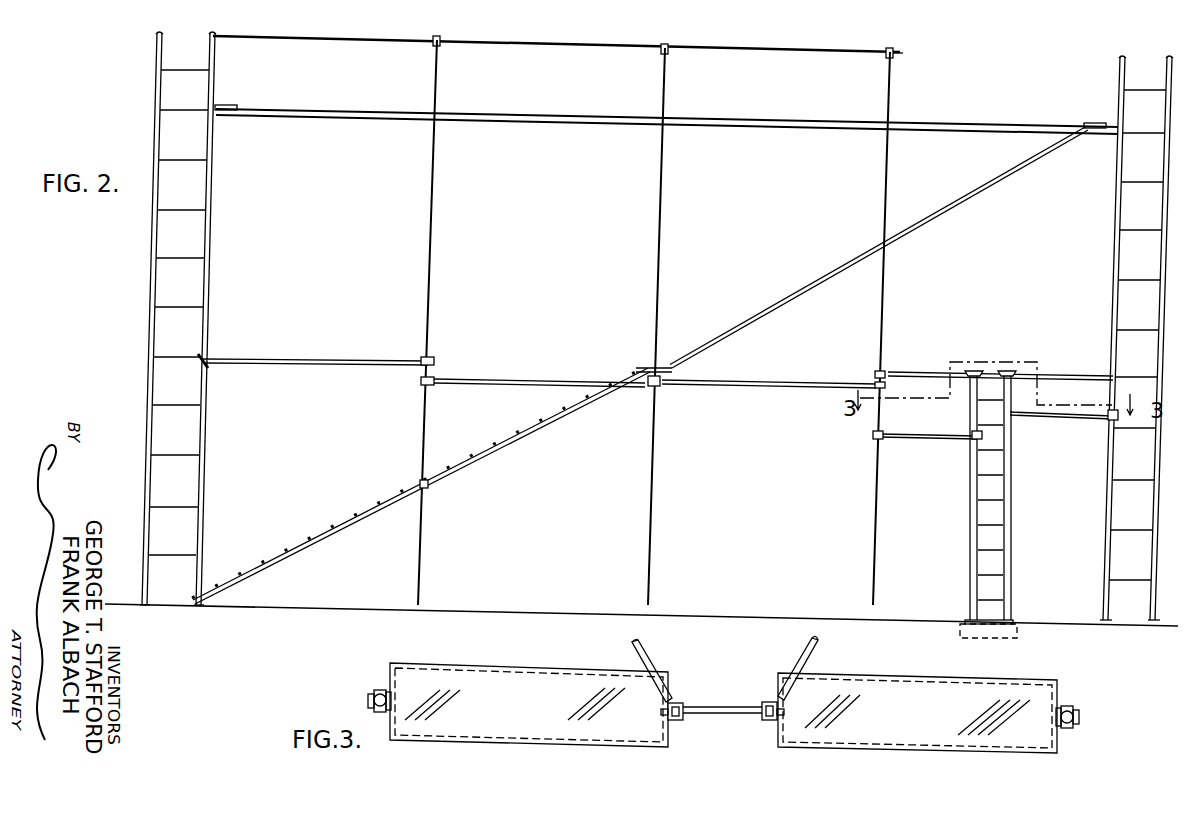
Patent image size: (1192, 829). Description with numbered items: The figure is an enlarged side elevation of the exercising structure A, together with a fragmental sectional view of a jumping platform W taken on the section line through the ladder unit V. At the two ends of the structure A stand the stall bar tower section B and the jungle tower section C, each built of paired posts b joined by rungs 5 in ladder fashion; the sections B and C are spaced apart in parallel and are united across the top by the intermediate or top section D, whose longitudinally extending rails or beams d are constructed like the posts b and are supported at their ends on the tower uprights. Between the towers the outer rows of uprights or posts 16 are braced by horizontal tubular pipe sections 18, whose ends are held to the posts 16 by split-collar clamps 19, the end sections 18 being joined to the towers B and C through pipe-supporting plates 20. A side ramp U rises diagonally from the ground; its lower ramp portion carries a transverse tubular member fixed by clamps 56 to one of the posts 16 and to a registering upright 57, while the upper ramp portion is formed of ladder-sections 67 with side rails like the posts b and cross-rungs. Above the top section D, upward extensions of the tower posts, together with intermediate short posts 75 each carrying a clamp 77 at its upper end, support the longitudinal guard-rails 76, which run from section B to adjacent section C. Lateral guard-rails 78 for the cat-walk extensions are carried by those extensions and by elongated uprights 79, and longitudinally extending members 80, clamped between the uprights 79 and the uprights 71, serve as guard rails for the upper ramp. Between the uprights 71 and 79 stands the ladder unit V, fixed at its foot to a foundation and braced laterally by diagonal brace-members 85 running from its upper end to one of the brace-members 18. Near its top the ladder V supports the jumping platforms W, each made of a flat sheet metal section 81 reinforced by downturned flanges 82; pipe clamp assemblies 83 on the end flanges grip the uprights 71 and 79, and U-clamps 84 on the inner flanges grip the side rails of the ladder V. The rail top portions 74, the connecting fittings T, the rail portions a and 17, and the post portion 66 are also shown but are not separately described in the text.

In FIG. 2, the rungs 5 is at (180, 232).
In FIG. 2, the uprights or posts 16 is at (432, 266).
In FIG. 2, the connector bracket 17 is at (411, 406).
In FIG. 2, the tubular pipe sections 18 is at (344, 358).
In FIG. 2, the clamps 19 is at (420, 380).
In FIG. 2, the pipe-supporting plates 20 is at (206, 354).
In FIG. 2, the clamps 56 is at (430, 486).
In FIG. 2, the upright 57 is at (420, 546).
In FIG. 2, the center post 66 is at (655, 488).
In FIG. 2, the ladder-sections 67 is at (776, 310).
In FIG. 2, the uprights 71 is at (886, 300).
In FIG. 3, the uprights 71 is at (374, 702).
In FIG. 2, the ladder rail top 74 is at (157, 70).
In FIG. 2, the intermediate uprights or relatively short posts 75 is at (436, 78).
In FIG. 2, the guard-rails 76 is at (548, 46).
In FIG. 2, the clamp 77 is at (438, 38).
In FIG. 2, the laterally disposed guard-rails 78 is at (1122, 110).
In FIG. 2, the uprights 79 is at (1120, 226).
In FIG. 3, the uprights 79 is at (1079, 714).
In FIG. 2, the longitudinally extending members 80 is at (968, 136).
In FIG. 3, the flat sheet metal section 81 is at (546, 704).
In FIG. 3, the downturned flanges 82 is at (560, 668).
In FIG. 2, the pipe clamp assemblies 83 is at (876, 438).
In FIG. 3, the pipe clamp assemblies 83 is at (372, 698).
In FIG. 2, the U-clamps 84 is at (974, 434).
In FIG. 3, the U-clamps 84 is at (712, 696).
In FIG. 2, the brace-members 85 is at (1012, 369).
In FIG. 3, the brace-members 85 is at (794, 650).
In FIG. 2, the structure A is at (994, 87).
In FIG. 2, the stall bar tower section B is at (170, 300).
In FIG. 2, the jungle tower section C is at (1140, 298).
In FIG. 2, the intermediate or top section D is at (768, 122).
In FIG. 2, the rail end fitting T is at (226, 109).
In FIG. 2, the side ramps U is at (480, 456).
In FIG. 2, the ladder unit V is at (1006, 498).
In FIG. 3, the ladder unit V is at (694, 742).
In FIG. 2, the jumping platforms W is at (920, 438).
In FIG. 3, the jumping platforms W is at (494, 662).
In FIG. 2, the upper rail tube a is at (622, 120).
In FIG. 2, the post b is at (150, 240).
In FIG. 2, the rails or beams d is at (616, 130).